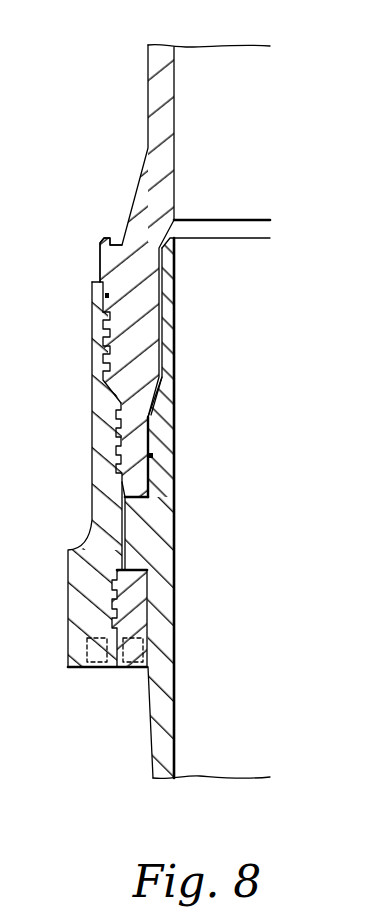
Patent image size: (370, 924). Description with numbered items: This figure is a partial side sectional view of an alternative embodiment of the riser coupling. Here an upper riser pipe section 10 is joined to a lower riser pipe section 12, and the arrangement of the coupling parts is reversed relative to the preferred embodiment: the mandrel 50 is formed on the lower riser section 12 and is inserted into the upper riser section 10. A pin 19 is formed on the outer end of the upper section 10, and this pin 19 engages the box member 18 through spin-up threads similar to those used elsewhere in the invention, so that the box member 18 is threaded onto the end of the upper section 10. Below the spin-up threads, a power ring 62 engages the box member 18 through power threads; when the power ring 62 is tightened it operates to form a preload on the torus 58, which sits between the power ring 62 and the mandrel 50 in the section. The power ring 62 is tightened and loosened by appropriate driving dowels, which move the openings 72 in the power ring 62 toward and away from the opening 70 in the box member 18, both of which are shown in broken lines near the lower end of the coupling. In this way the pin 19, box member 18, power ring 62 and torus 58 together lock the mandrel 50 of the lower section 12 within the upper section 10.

The upper riser pipe section 10 is at (146, 78).
The pin 19 is at (100, 253).
The mandrel 50 is at (178, 328).
The box member 18 is at (98, 467).
The torus 58 is at (135, 533).
The power ring 62 is at (135, 605).
The opening 70 is at (92, 672).
The openings 72 is at (132, 670).
The lower riser pipe section 12 is at (145, 770).